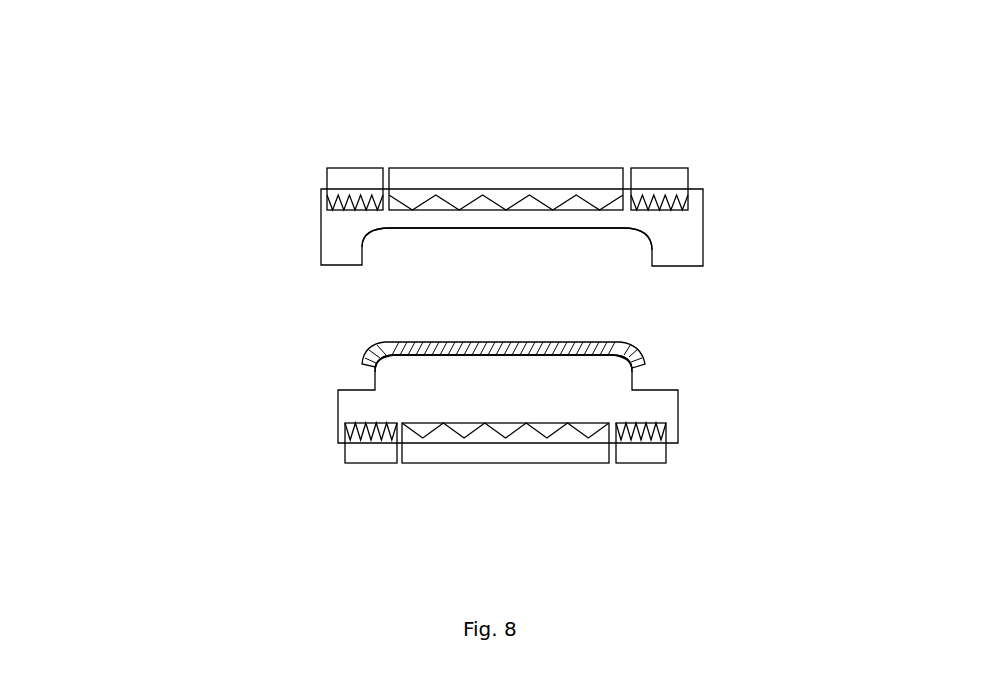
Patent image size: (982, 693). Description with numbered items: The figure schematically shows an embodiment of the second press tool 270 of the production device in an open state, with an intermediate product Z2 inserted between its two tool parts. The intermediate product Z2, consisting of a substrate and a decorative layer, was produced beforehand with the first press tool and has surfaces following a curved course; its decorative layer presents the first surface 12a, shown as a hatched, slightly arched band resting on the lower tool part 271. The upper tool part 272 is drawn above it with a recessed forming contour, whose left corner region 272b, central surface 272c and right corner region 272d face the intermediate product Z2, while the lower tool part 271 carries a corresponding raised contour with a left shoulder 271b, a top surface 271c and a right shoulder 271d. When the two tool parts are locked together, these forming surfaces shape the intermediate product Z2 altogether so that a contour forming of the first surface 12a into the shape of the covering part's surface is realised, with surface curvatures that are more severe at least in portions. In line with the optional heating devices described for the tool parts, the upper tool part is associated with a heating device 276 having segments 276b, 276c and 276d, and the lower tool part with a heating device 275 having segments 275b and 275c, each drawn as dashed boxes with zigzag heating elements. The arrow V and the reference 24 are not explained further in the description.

The viewing direction V is at (173, 70).
The intermediate product Z2 is at (688, 340).
The forming tool 24 is at (388, 128).
The second press tool 270 is at (685, 80).
The upper die body 272 is at (670, 232).
The left inner corner of upper die 272b is at (380, 250).
The inner surface of upper die 272c is at (503, 236).
The right inner corner of upper die 272d is at (640, 250).
The upper clamping frame 276 is at (678, 128).
The left upper clamping segment 276b is at (360, 167).
The central upper clamping segment 276c is at (465, 168).
The right upper clamping segment 276d is at (665, 168).
The first surface of the decorative layer 12a is at (568, 342).
The lower tool half 275 is at (745, 510).
The lower die body 271 is at (357, 417).
The left shoulder of lower die 271b is at (365, 370).
The top surface of lower die 271c is at (462, 360).
The right shoulder of lower die 271d is at (645, 373).
The left lower clamping segment 275b is at (370, 463).
The lower clamping segment 275c is at (522, 463).